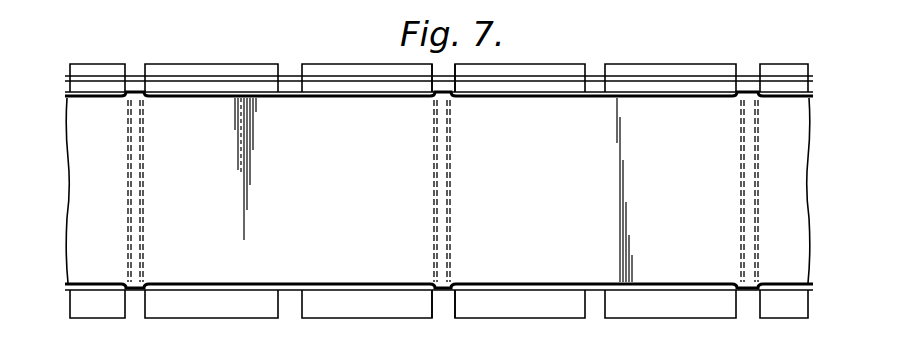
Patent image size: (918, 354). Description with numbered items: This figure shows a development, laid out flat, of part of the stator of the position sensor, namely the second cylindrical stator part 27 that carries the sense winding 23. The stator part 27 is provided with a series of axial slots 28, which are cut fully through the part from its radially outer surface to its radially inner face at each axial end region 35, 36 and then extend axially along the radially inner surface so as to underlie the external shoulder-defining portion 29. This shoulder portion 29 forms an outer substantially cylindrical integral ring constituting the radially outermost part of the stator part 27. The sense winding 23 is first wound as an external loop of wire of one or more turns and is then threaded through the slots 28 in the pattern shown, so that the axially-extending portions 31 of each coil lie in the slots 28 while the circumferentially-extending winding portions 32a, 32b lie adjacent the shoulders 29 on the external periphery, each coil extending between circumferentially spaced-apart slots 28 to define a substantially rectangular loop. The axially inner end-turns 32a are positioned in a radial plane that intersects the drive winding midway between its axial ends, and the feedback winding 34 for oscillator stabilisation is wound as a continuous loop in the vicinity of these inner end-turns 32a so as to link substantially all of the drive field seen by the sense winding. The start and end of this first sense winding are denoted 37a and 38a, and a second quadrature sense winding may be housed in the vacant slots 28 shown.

The sense winding 23 is at (508, 103).
The second cylindrical stator part 27 is at (550, 58).
The axial slots 28 is at (438, 68).
The shoulder portion 29 is at (301, 181).
The axially-extending portions 31 is at (452, 210).
The inner end-turns 32a is at (567, 98).
The circumferentially-extending winding portions 32b is at (508, 283).
The feedback winding 34 is at (345, 63).
The axial end region 35 is at (207, 63).
The axial end region 36 is at (202, 320).
The start of first sense winding 37a is at (758, 205).
The end of first sense winding 38a is at (740, 195).